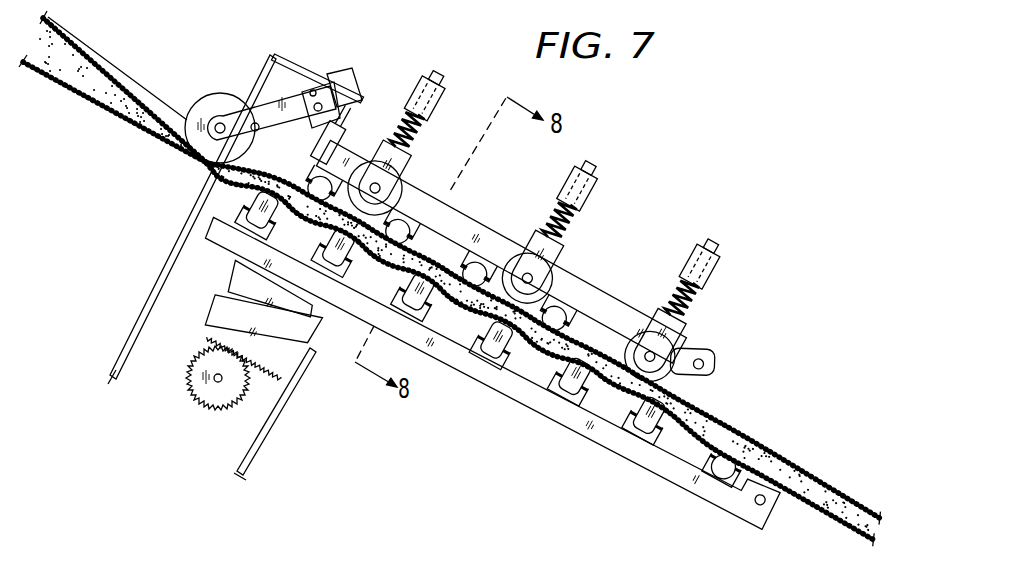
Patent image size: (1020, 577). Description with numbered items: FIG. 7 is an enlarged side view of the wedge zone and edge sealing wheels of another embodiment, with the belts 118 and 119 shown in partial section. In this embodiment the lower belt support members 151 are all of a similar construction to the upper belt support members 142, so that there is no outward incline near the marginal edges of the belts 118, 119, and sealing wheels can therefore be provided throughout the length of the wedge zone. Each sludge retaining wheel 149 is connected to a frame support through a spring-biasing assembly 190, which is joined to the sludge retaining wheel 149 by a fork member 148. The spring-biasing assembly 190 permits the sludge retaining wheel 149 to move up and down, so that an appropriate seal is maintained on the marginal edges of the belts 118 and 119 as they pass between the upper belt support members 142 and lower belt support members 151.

The belt 118 is at (121, 118).
The belt 119 is at (100, 63).
The upper belt support member 142 is at (405, 230).
The fork member 148 is at (540, 257).
The sludge retaining wheel 149 is at (550, 283).
The lower belt support member 151 is at (480, 350).
The spring-biasing assembly 190 is at (702, 310).